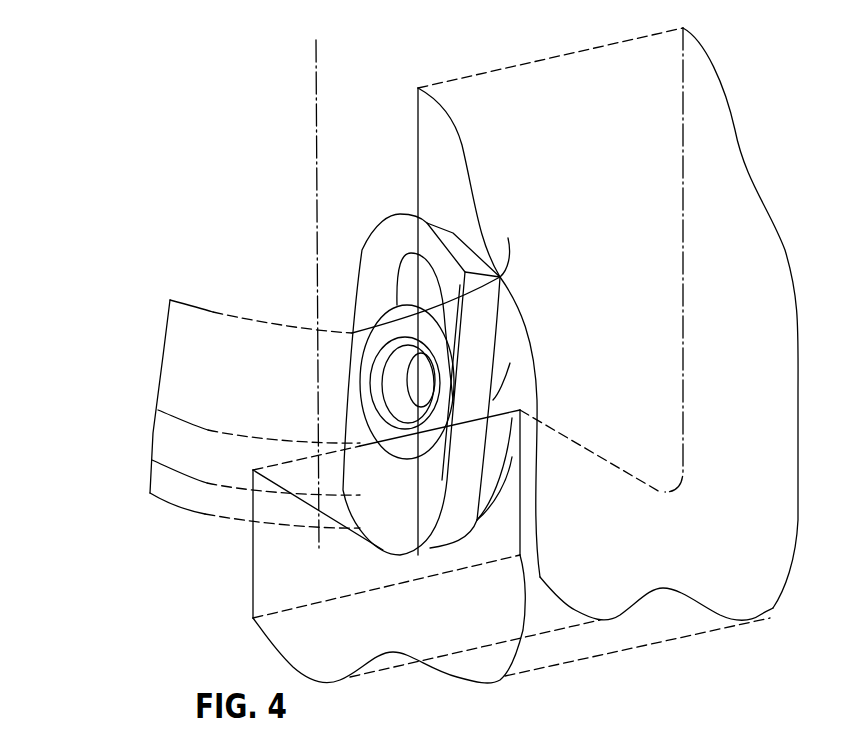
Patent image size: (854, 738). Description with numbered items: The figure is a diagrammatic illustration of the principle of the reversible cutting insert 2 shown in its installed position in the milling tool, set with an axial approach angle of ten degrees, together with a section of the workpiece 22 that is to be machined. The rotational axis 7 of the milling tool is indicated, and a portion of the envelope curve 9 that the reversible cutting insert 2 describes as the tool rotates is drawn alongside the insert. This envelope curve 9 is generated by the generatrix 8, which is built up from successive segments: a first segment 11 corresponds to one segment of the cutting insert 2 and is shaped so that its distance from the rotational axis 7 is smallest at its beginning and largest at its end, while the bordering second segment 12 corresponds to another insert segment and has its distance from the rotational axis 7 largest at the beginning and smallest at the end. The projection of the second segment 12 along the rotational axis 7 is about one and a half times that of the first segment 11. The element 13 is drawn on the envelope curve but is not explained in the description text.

The cutting insert 2 is at (367, 238).
The axis of rotation 7 is at (316, 120).
The workpiece segment 8 is at (163, 377).
The feed direction 9 is at (245, 393).
The first machined surface 11 is at (150, 477).
The second machined surface 12 is at (153, 433).
The third machined surface 13 is at (163, 356).
The tool body 22 is at (634, 243).